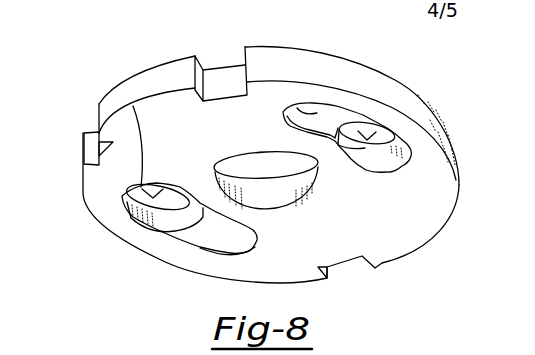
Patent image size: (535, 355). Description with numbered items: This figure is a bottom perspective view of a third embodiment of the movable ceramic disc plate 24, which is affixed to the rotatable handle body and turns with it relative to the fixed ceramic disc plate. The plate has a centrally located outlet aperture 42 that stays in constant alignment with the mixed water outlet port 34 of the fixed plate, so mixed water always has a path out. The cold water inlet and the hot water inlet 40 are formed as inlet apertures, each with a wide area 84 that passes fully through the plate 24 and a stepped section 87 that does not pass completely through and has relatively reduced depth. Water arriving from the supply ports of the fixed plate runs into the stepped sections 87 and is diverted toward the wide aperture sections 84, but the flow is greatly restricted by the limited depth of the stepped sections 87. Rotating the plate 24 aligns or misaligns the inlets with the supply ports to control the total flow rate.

The movable ceramic disc plate 24 is at (107, 182).
The mixed water outlet port 34 is at (380, 136).
The hot water inlet 40 is at (143, 110).
The outlet aperture 42 is at (265, 188).
The wide areas 84 is at (343, 125).
The stepped sections 87 is at (298, 108).